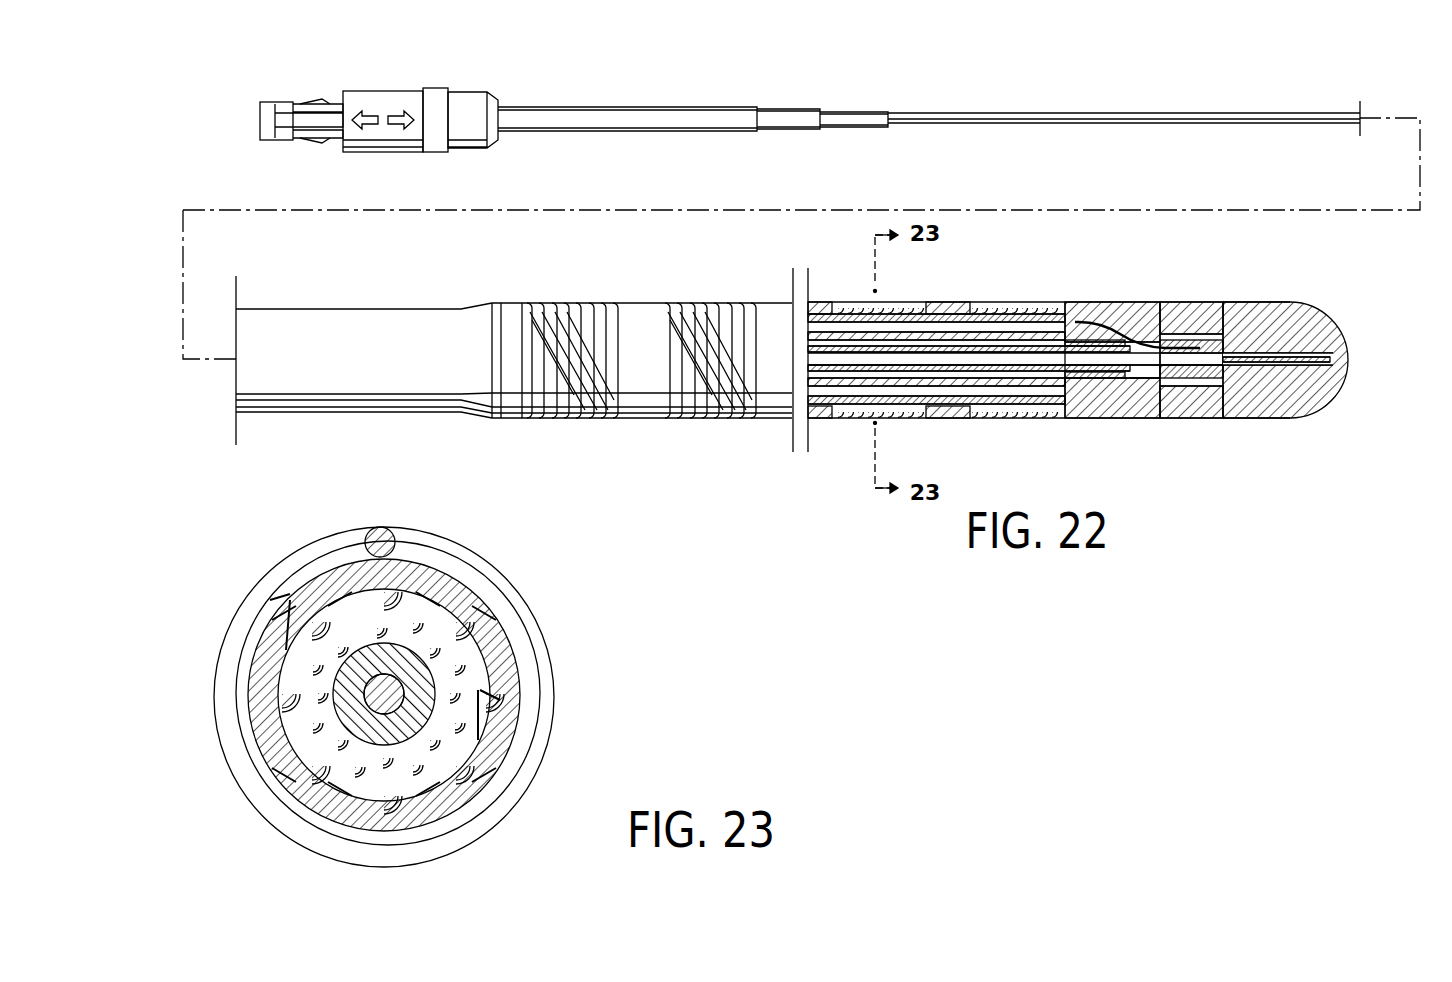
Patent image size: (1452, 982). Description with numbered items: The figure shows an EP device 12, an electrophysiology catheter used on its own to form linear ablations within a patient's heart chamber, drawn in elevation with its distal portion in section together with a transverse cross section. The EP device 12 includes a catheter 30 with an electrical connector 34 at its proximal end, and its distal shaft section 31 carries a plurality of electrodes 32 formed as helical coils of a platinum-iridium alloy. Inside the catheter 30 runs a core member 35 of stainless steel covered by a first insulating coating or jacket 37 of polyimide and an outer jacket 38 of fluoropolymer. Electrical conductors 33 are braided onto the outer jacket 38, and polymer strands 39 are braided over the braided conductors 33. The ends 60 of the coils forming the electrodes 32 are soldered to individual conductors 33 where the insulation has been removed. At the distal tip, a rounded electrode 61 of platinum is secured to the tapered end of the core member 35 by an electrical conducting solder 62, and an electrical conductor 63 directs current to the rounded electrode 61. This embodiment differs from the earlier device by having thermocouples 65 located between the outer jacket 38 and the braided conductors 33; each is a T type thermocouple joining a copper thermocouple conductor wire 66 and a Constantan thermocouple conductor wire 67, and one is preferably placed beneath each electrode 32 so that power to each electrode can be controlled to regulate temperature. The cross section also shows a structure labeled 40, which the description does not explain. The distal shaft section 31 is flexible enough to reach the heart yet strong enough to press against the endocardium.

In FIG. 22, the EP device 12 is at (1250, 94).
In FIG. 22, the catheter 30 is at (1111, 121).
In FIG. 22, the electrical connector 34 is at (370, 91).
In FIG. 22, the distal shaft section 31 is at (641, 300).
In FIG. 22, the electrodes 32 is at (560, 418).
In FIG. 23, the electrodes 32 is at (228, 712).
In FIG. 22, the electrical conductors 33 is at (960, 304).
In FIG. 23, the electrical conductors 33 is at (290, 778).
In FIG. 22, the thermocouples 65 is at (1005, 304).
In FIG. 23, the thermocouples 65 is at (345, 585).
In FIG. 22, the ends of the metallic coils 60 is at (1075, 304).
In FIG. 22, the core member 35 is at (1088, 319).
In FIG. 23, the core member 35 is at (462, 760).
In FIG. 22, the electrical conductor 63 is at (1160, 304).
In FIG. 22, the electrical conducting solder 62 is at (1305, 335).
In FIG. 22, the rounded electrode 61 is at (1310, 412).
In FIG. 22, the outer jacket 38 is at (1130, 394).
In FIG. 23, the outer jacket 38 is at (478, 648).
In FIG. 22, the first insulating coating or jacket 37 is at (1082, 406).
In FIG. 23, the first insulating coating or jacket 37 is at (414, 616).
In FIG. 23, the polymer strands 39 is at (246, 622).
In FIG. 23, the spacer 40 is at (300, 588).
In FIG. 23, the copper thermocouple conductor wire 66 is at (352, 777).
In FIG. 23, the Constantan thermocouple conductor wire 67 is at (416, 776).